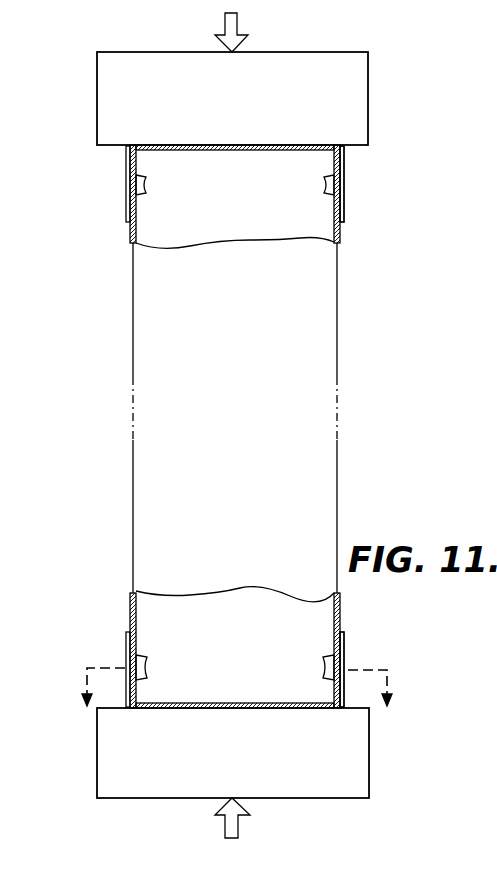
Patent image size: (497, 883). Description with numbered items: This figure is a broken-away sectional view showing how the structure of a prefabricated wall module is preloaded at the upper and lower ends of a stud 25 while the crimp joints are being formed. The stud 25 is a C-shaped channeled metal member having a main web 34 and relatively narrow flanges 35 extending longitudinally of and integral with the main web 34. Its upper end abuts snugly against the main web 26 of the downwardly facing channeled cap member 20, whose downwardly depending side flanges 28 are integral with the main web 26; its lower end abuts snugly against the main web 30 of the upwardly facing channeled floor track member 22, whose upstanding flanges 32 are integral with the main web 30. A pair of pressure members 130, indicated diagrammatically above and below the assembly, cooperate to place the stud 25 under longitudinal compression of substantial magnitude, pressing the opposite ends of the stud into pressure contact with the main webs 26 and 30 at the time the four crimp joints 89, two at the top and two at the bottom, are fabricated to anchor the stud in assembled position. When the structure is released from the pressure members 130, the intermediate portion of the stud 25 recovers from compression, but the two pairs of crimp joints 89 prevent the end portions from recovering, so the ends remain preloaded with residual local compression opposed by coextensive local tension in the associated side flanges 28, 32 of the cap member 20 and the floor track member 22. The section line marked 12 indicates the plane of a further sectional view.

The pressure members 130 is at (233, 425).
The main web 26 is at (226, 150).
The side flanges 28 is at (127, 162).
The crimp joints 89 is at (149, 190).
The cap member 20 is at (348, 203).
The flanges 35 is at (340, 238).
The main web 34 is at (257, 337).
The stud 25 is at (343, 340).
The upstanding flanges 32 is at (127, 641).
The floor track member 22 is at (348, 655).
The main web 30 is at (207, 704).
The section line 12- 12 is at (235, 692).